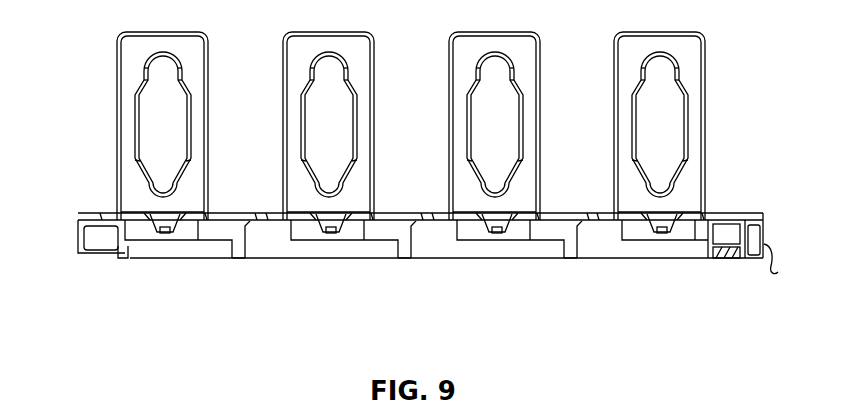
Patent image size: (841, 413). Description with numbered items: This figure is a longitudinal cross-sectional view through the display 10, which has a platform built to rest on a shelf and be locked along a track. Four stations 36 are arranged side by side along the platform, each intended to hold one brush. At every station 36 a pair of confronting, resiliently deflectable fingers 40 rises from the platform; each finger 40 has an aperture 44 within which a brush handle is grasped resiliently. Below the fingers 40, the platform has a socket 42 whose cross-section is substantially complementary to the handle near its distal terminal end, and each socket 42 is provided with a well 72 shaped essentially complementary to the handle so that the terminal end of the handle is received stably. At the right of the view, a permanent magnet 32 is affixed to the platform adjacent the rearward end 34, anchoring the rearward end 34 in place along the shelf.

The display 10 is at (72, 248).
The permanent magnet 32 is at (726, 254).
The rearward end 34 is at (769, 264).
The station 36 is at (168, 245).
The resiliently deflectable finger 40 is at (214, 76).
The socket 42 is at (183, 212).
The aperture 44 is at (196, 137).
The well 72 is at (164, 232).